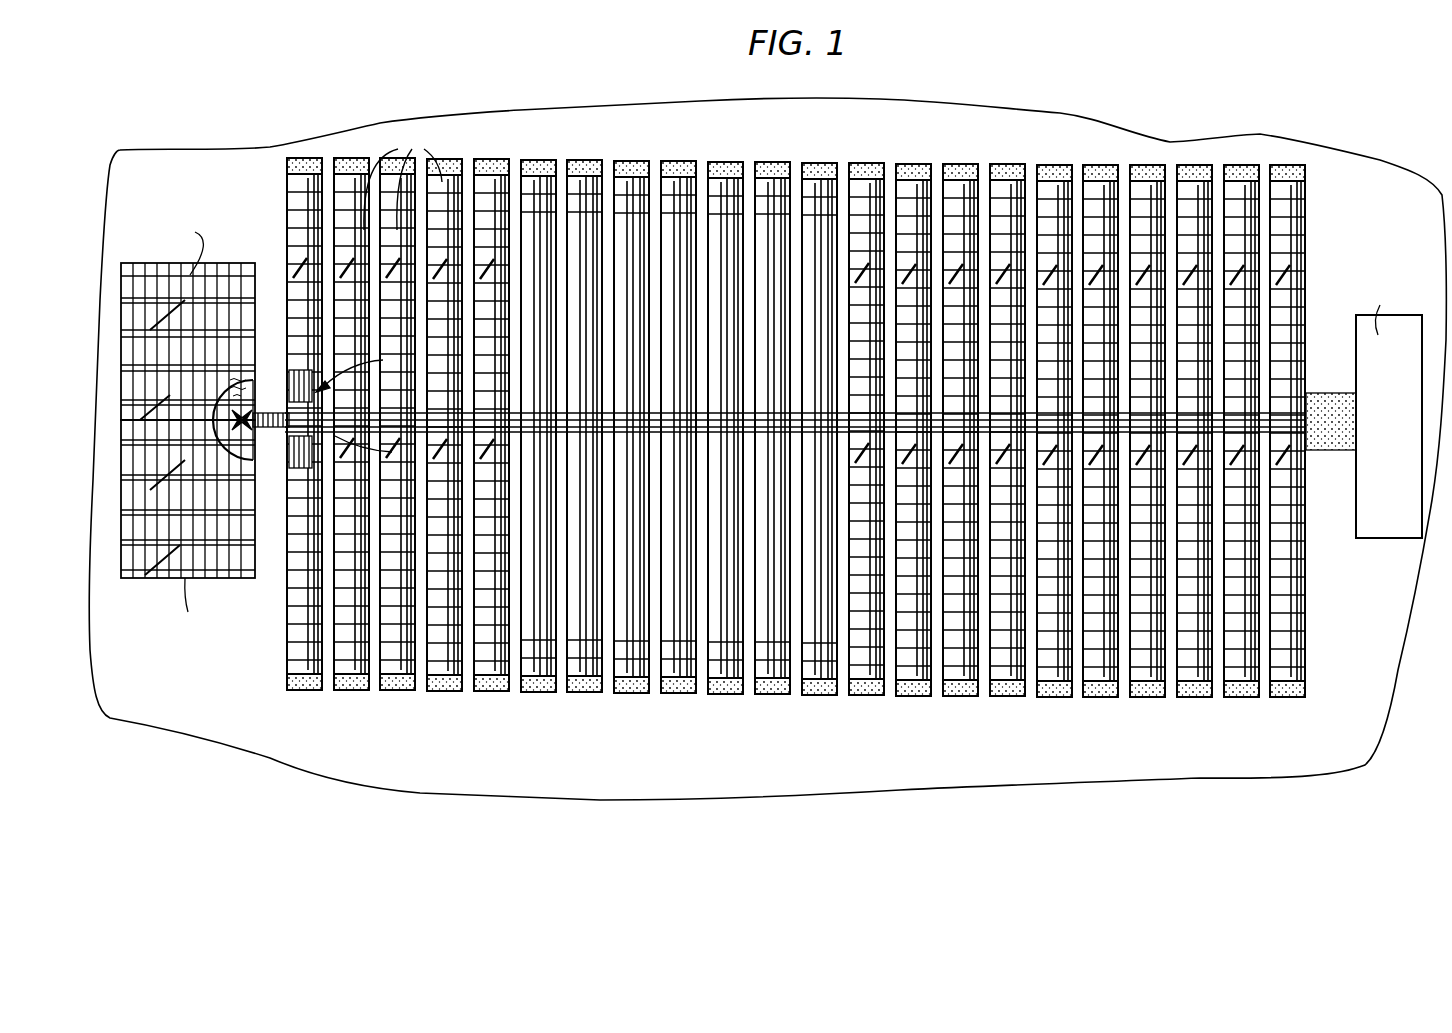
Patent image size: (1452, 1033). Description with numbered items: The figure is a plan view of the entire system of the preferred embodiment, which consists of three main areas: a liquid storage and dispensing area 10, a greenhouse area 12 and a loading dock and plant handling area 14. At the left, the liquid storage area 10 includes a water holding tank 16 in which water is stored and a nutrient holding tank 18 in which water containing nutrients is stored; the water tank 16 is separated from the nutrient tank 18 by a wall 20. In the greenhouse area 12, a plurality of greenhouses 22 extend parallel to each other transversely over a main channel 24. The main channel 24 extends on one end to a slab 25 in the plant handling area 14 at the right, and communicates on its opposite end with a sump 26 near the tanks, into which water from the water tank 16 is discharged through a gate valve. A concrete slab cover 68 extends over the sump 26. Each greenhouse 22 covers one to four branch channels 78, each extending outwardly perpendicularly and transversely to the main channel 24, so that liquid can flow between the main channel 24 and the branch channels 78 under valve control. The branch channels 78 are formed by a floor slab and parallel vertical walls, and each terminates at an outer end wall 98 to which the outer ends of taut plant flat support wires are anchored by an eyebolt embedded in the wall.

The liquid storage and dispensing area 10 is at (152, 203).
The greenhouse area 12 is at (733, 153).
The loading dock and plant handling area 14 is at (1384, 255).
The water holding tank 16 is at (222, 578).
The nutrient holding tank 18 is at (232, 270).
The wall 20 is at (247, 432).
The greenhouses 22 is at (456, 668).
The main channel 24 is at (652, 425).
The slab 25 is at (1338, 450).
The sump 26 is at (268, 412).
The concrete slab cover 68 is at (250, 424).
The branch channels 78 is at (292, 372).
The outer end wall 98 is at (540, 172).